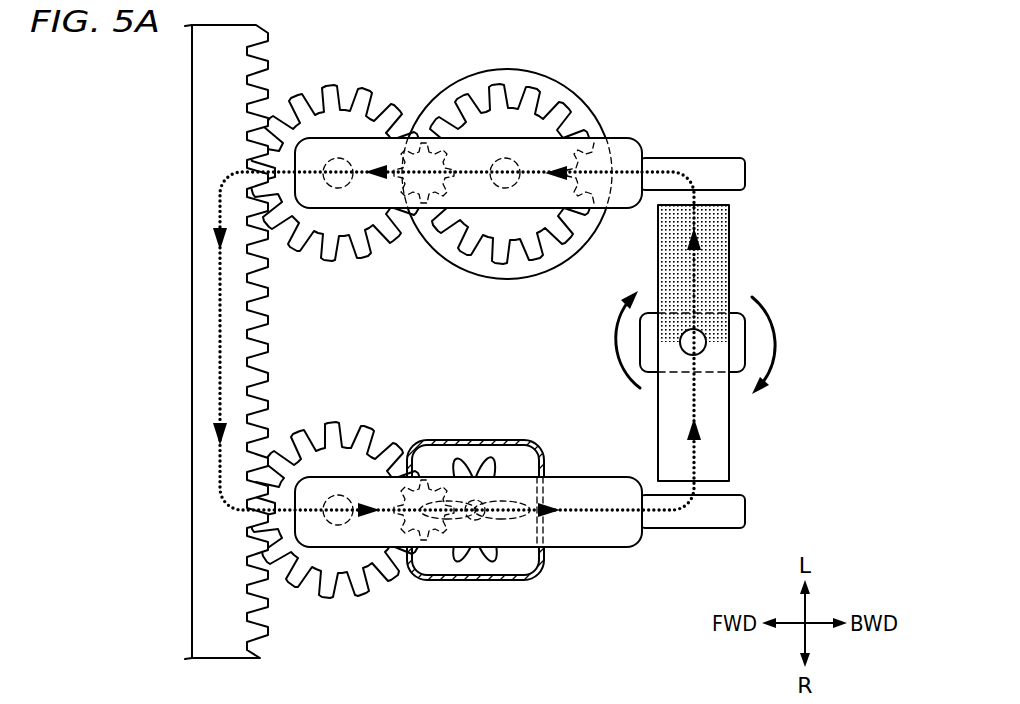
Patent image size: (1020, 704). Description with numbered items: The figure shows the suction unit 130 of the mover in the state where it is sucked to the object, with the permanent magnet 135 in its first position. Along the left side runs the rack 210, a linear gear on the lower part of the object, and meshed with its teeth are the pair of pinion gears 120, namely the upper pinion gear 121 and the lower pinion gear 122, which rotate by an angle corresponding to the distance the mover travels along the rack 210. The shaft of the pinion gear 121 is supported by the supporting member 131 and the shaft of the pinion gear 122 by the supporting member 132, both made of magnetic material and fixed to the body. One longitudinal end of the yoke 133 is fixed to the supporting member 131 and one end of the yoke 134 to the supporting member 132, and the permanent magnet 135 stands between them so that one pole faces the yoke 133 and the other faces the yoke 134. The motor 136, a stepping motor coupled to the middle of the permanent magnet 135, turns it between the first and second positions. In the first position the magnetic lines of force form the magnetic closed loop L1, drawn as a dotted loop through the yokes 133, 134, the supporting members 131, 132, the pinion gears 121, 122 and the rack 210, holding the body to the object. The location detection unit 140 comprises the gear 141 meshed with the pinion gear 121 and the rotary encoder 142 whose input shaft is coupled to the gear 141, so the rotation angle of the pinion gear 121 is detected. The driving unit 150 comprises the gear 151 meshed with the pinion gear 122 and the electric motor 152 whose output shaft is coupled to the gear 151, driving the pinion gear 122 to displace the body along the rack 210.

The pinion gears 120 is at (352, 342).
The pinion gear 121 is at (331, 92).
The pinion gear 122 is at (363, 590).
The suction unit 130 is at (562, 339).
The supporting member 131 is at (626, 148).
The supporting member 132 is at (605, 540).
The yoke 133 is at (745, 172).
The yoke 134 is at (714, 522).
The permanent magnet 135 is at (722, 443).
The motor 136 is at (745, 341).
The location detection unit 140 is at (521, 157).
The gear 141 is at (464, 102).
The rotary encoder 142 is at (513, 78).
The driving unit 150 is at (512, 488).
The gear 151 is at (453, 463).
The electric motor 152 is at (522, 441).
The rack 210 is at (207, 103).
The magnetic closed loop L1 is at (700, 268).